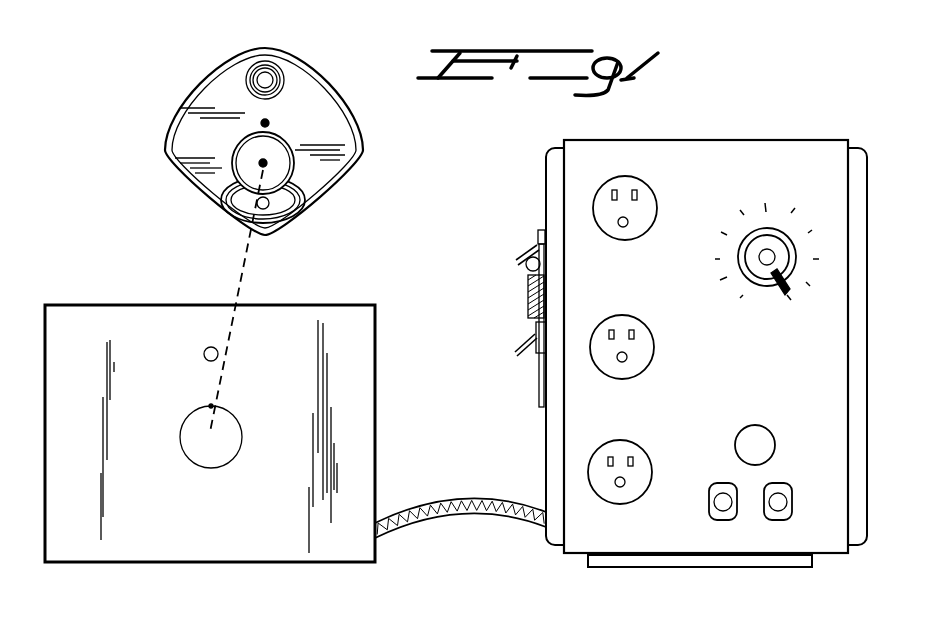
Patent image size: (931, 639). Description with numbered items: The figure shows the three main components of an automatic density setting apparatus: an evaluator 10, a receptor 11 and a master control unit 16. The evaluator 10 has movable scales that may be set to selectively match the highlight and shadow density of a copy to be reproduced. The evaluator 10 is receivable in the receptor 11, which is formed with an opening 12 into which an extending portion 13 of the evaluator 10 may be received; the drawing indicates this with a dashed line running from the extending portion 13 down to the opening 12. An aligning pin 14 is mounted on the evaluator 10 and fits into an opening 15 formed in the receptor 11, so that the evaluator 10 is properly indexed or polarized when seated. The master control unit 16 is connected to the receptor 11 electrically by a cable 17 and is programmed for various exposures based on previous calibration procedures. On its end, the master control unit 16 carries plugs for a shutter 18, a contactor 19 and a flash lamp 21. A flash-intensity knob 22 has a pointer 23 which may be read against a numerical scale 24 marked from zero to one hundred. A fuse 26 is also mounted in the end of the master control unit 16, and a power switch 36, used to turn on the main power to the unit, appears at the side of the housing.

The evaluator 10 is at (372, 171).
The receptor 11 is at (398, 378).
The opening 12 is at (220, 448).
The extending portion 13 is at (265, 162).
The aligning pin 14 is at (268, 121).
The opening 15 is at (207, 398).
The master control unit 16 is at (828, 88).
The cable 17 is at (430, 505).
The shutter 18 is at (642, 223).
The contactor 19 is at (643, 358).
The flash lamp 21 is at (640, 482).
The flash-intensity knob 22 is at (761, 276).
The pointer 23 is at (782, 293).
The numerical scale 24 is at (718, 200).
The fuse 26 is at (748, 433).
The power switch 36 is at (515, 355).